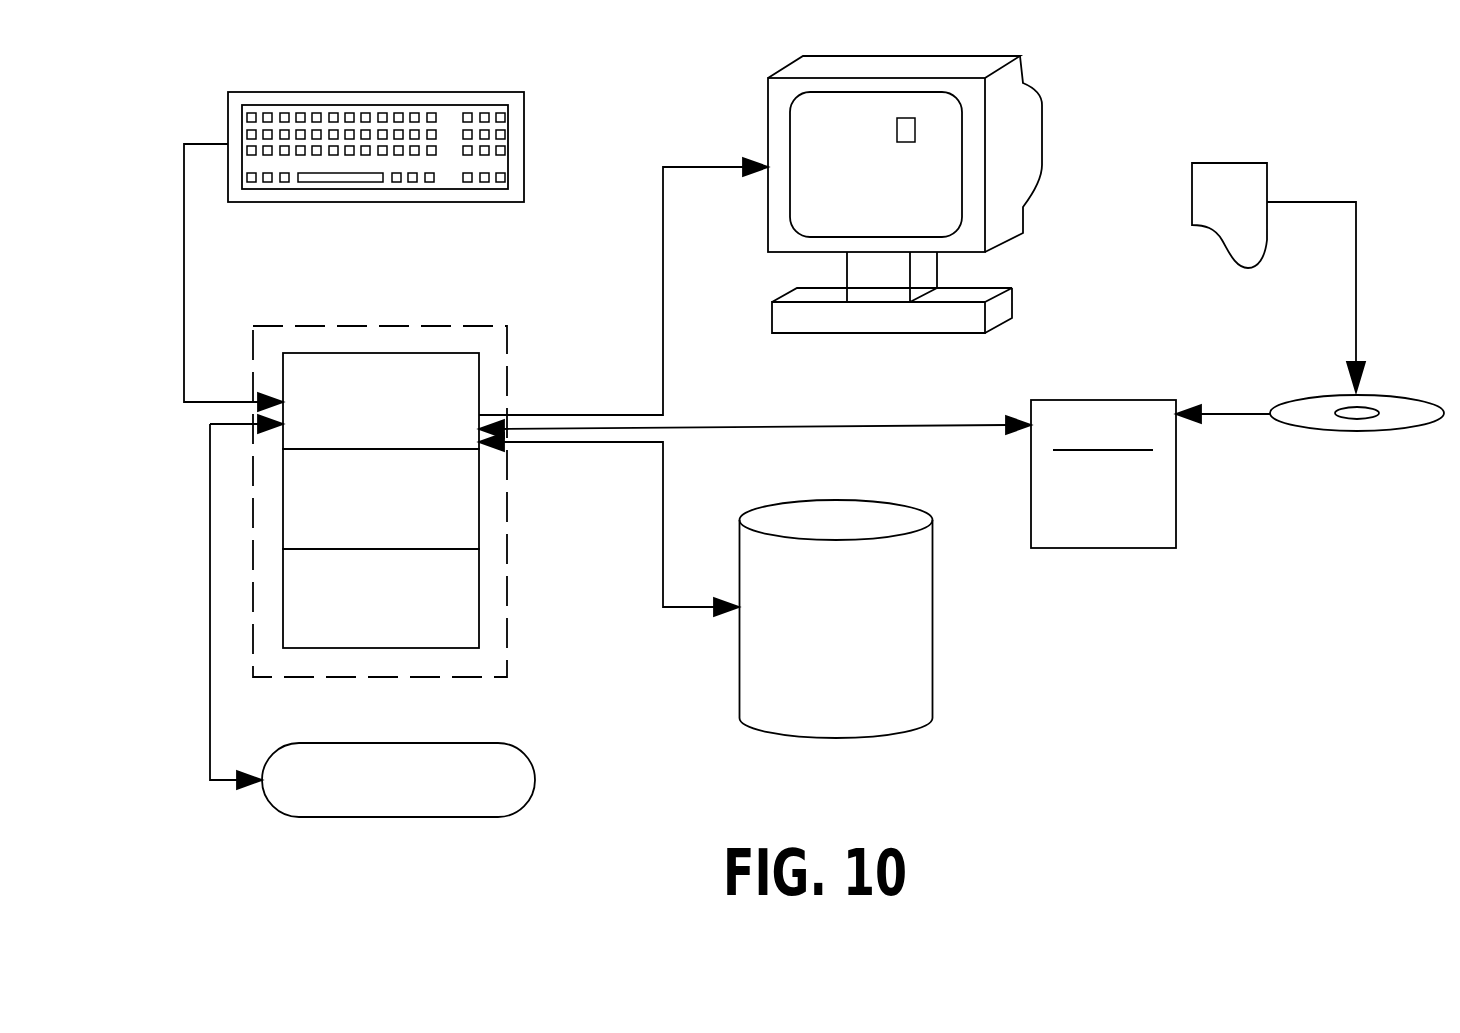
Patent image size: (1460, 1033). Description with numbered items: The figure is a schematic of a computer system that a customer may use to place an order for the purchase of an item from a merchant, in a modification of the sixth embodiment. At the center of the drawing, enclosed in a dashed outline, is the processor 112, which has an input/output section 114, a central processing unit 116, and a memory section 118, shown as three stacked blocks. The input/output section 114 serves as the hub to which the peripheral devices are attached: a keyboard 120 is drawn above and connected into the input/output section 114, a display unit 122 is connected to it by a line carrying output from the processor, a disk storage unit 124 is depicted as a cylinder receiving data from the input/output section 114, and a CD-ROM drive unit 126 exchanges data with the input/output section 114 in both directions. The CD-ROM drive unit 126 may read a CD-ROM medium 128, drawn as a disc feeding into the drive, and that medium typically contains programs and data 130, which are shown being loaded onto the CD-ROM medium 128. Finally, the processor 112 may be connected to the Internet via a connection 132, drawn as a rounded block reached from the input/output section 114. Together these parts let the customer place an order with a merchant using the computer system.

The processor 112 is at (460, 326).
The input/output section 114 is at (317, 373).
The central processing unit 116 is at (458, 528).
The memory section 118 is at (458, 632).
The keyboard 120 is at (524, 145).
The display unit 122 is at (768, 133).
The disk storage unit 124 is at (932, 627).
The CD-ROM drive unit 126 is at (1083, 400).
The CD-ROM medium 128 is at (1307, 395).
The programs and data 130 is at (1192, 192).
The connection 132 is at (535, 780).